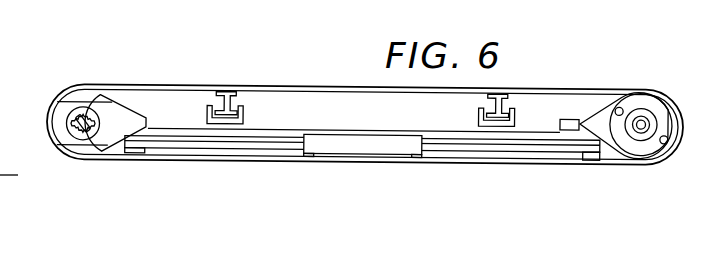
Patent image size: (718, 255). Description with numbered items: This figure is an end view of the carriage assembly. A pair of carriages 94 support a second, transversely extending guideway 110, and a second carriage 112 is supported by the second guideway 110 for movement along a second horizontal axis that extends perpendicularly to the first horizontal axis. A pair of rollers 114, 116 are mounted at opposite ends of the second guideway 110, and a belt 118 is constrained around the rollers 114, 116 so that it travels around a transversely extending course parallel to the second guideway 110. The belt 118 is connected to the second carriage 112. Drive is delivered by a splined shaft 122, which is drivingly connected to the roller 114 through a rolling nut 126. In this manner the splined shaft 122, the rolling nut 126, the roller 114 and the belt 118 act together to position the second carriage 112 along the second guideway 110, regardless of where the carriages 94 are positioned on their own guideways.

The carriage 94 is at (248, 112).
The second guideway 110 is at (277, 128).
The second carriage 112 is at (372, 128).
The roller 114 is at (92, 90).
The roller 116 is at (643, 93).
The belt 118 is at (562, 87).
The splined shaft 122 is at (83, 130).
The rolling nut 126 is at (72, 112).